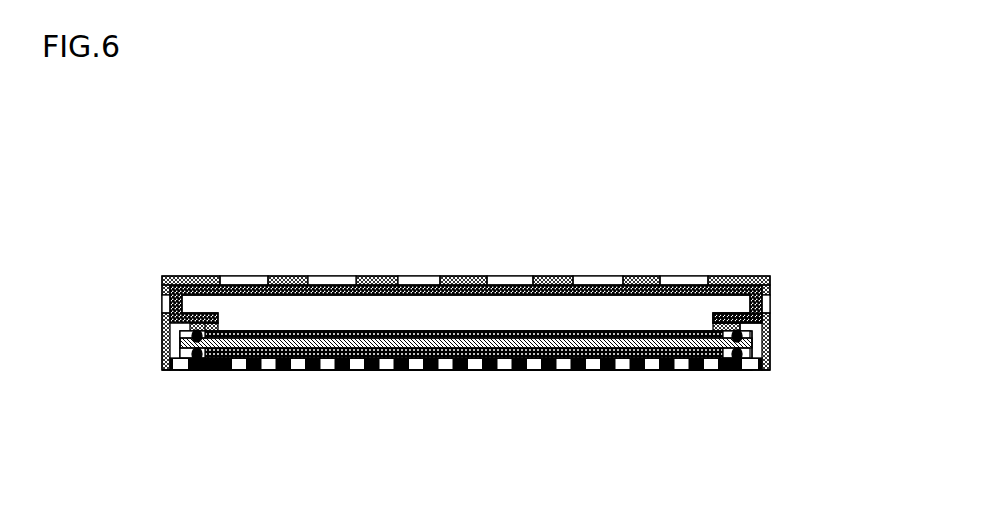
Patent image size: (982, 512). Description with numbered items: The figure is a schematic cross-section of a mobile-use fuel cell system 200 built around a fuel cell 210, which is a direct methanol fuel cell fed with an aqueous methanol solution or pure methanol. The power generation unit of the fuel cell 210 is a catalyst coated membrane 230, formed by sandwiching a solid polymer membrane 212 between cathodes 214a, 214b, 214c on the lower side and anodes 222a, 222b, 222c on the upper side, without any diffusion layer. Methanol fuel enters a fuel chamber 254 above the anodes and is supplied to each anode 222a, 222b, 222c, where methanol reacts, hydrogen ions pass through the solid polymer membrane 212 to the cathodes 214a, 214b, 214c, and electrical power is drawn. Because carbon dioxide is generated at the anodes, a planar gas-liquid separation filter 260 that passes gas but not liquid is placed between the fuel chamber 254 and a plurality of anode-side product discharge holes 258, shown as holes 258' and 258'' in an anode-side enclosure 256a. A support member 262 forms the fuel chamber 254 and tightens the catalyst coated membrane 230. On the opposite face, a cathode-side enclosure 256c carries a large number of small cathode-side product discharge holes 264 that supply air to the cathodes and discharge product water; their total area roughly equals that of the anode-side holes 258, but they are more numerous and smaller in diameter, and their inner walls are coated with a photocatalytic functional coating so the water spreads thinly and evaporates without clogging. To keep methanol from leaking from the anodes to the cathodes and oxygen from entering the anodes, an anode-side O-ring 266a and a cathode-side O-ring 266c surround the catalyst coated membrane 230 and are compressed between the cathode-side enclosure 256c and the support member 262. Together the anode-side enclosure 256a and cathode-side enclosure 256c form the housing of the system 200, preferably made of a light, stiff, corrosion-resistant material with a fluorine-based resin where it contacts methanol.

The mobile-use fuel cell system 200 is at (730, 134).
The fuel cell 210 is at (808, 330).
The catalyst coated membrane 230 is at (529, 358).
The solid polymer membrane 212 is at (520, 368).
The cathode 214a is at (266, 364).
The cathode 214b is at (439, 366).
The cathode 214c is at (608, 366).
The anode 222a is at (272, 276).
The anode 222b is at (443, 276).
The anode 222c is at (613, 276).
The fuel chamber 254 is at (597, 302).
The anode-side enclosure 256a is at (198, 276).
The cathode-side enclosure 256c is at (165, 372).
The anode-side product discharge holes 258 is at (399, 234).
The anode-side product discharge hole 258' is at (198, 427).
The anode-side product discharge hole 258'' is at (780, 427).
The gas-liquid separation filter 260 is at (740, 312).
The support member 262 is at (345, 276).
The cathode-side product discharge holes 264 is at (351, 366).
The anode-side O-ring 266a is at (765, 276).
The cathode-side O-ring 266c is at (197, 372).